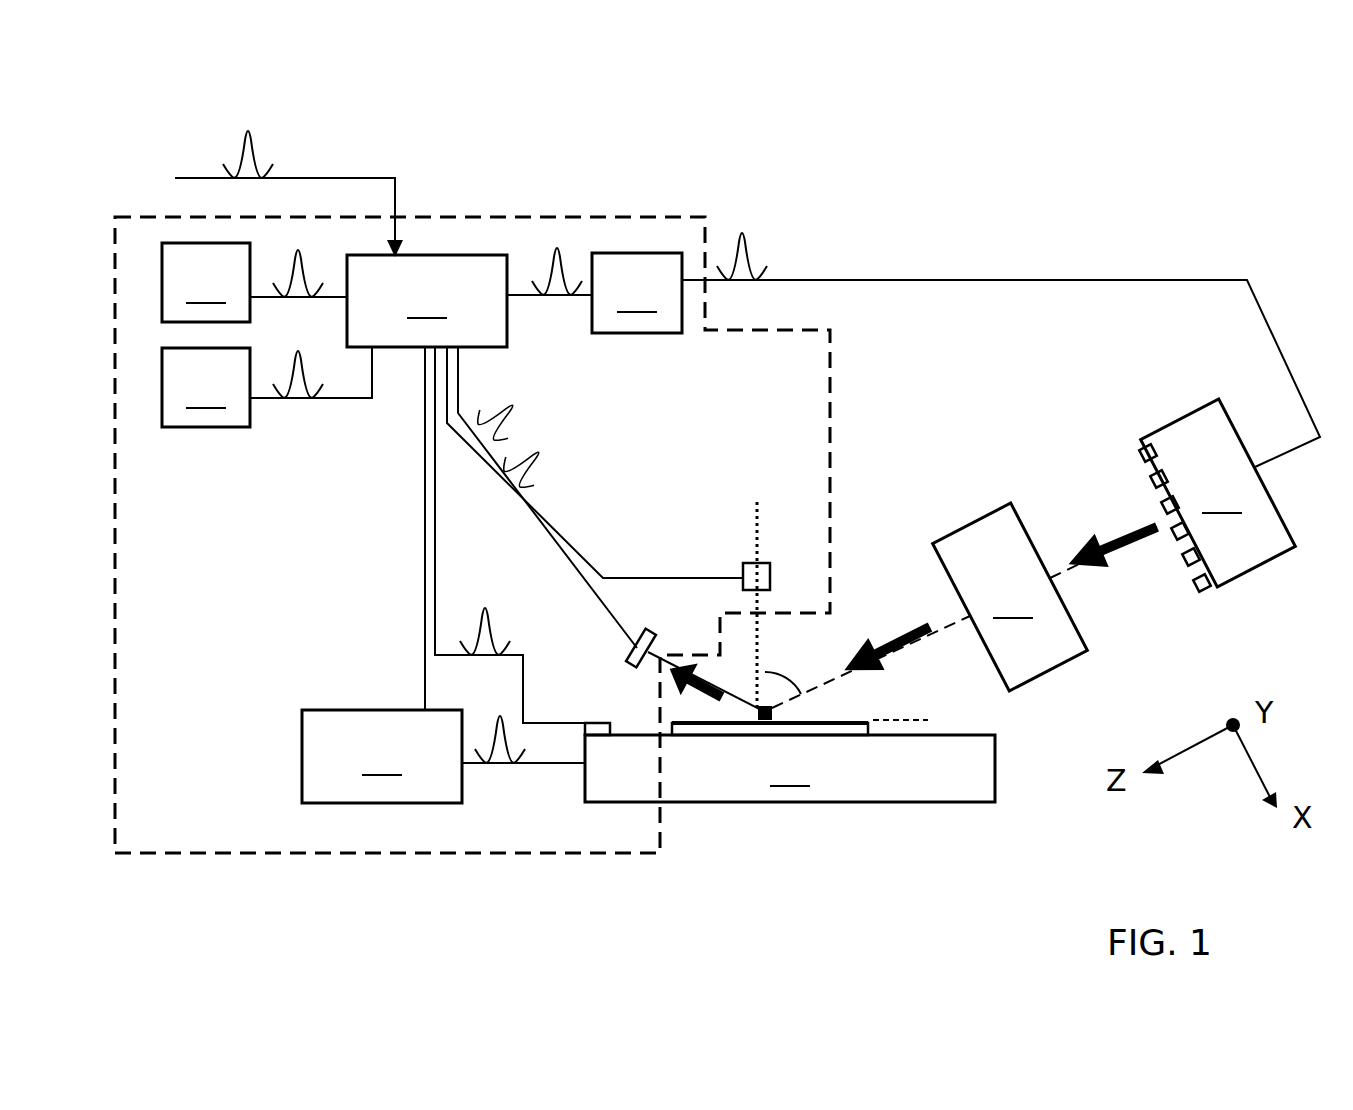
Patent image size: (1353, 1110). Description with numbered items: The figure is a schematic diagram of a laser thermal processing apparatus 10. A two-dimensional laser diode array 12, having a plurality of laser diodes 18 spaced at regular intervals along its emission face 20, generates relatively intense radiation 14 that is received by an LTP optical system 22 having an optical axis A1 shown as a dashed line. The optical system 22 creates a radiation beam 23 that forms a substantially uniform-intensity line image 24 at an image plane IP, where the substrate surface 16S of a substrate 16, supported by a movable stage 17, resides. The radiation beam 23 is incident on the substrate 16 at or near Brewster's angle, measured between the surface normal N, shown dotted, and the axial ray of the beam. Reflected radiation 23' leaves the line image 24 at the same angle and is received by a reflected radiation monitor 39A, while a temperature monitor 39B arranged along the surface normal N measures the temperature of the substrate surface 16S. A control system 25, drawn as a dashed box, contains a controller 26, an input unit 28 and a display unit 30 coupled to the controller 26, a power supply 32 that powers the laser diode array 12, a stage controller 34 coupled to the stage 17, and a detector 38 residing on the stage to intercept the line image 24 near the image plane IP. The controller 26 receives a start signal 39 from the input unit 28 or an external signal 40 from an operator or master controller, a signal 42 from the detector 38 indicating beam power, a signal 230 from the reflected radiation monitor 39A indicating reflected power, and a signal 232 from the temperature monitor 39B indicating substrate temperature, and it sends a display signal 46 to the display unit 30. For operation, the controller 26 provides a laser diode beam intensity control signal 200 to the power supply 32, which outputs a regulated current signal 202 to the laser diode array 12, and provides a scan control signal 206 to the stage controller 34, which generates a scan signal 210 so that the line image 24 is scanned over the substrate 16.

The LTP apparatus 10 is at (1006, 130).
The laser diode array 12 is at (1218, 493).
The radiation 14 is at (1093, 523).
The substrate 16 is at (845, 727).
The substrate surface 16S is at (797, 722).
The stage 17 is at (790, 768).
The laser diodes 18 is at (1140, 450).
The emission face 20 is at (1158, 586).
The LTP optical system 22 is at (1010, 597).
The radiation beam 23 is at (878, 587).
The reflected radiation 23' is at (706, 793).
The line image 24 is at (760, 720).
The control system 25 is at (485, 215).
The controller 26 is at (427, 301).
The input unit 28 is at (206, 282).
The display unit 30 is at (206, 387).
The power supply 32 is at (637, 293).
The stage controller 34 is at (382, 756).
The detector 38 is at (597, 722).
The signal 39 is at (307, 290).
The reflected radiation monitor 39A is at (632, 663).
The temperature monitor 39B is at (743, 567).
The external signal 40 is at (262, 157).
The signal 42 is at (490, 608).
The display signal 46 is at (313, 402).
The laser diode beam intensity control signal 200 is at (555, 243).
The regulated current signal 202 is at (753, 263).
The scan control signal 206 is at (410, 547).
The scan signal 210 is at (498, 767).
The signal 230 is at (535, 466).
The signal 232 is at (515, 393).
The optical axis A1 is at (958, 627).
The image plane IP is at (917, 720).
The surface normal N is at (755, 525).